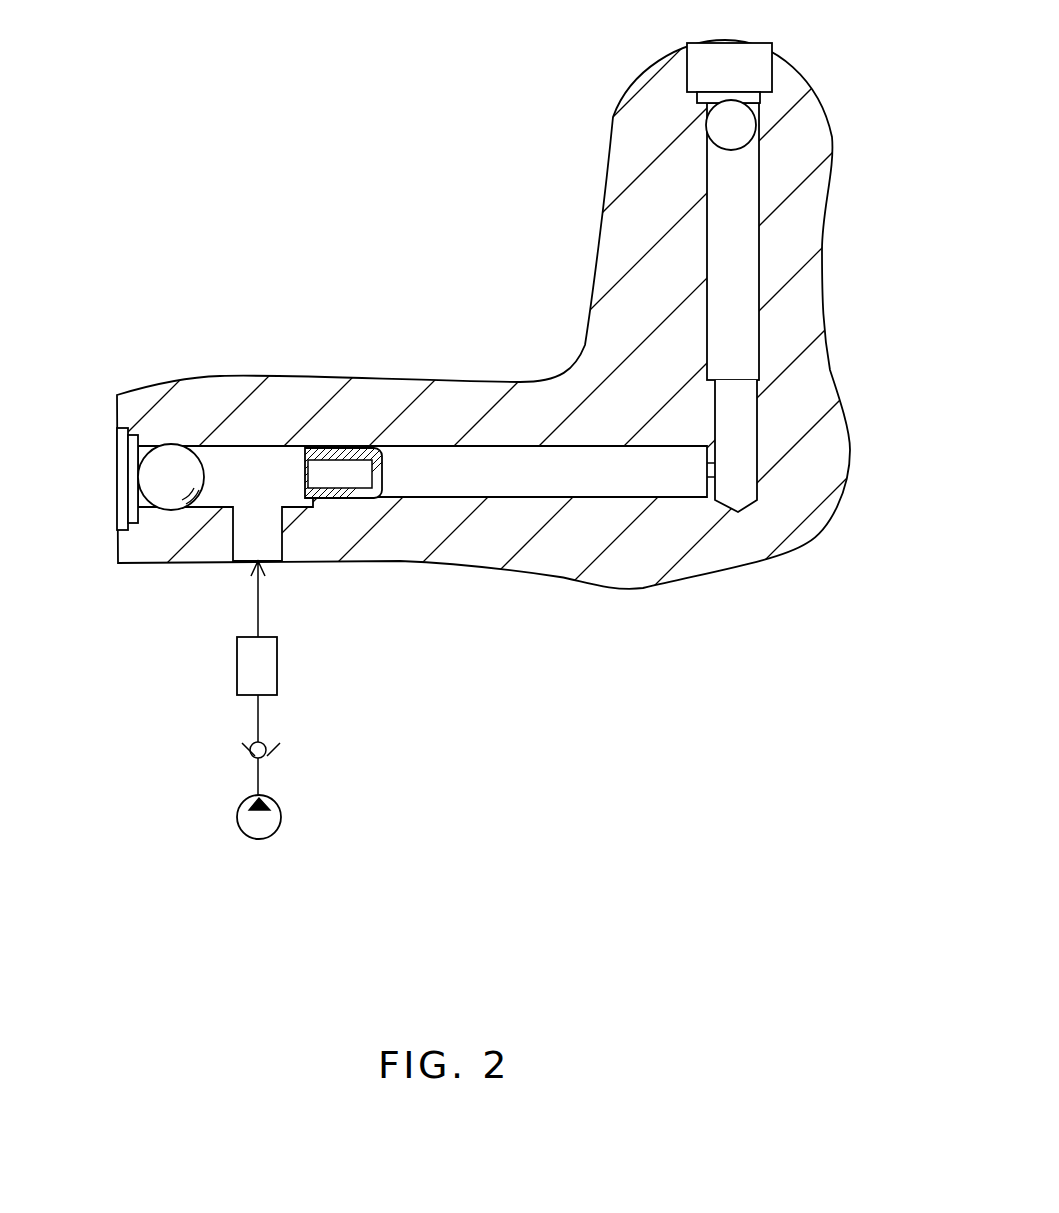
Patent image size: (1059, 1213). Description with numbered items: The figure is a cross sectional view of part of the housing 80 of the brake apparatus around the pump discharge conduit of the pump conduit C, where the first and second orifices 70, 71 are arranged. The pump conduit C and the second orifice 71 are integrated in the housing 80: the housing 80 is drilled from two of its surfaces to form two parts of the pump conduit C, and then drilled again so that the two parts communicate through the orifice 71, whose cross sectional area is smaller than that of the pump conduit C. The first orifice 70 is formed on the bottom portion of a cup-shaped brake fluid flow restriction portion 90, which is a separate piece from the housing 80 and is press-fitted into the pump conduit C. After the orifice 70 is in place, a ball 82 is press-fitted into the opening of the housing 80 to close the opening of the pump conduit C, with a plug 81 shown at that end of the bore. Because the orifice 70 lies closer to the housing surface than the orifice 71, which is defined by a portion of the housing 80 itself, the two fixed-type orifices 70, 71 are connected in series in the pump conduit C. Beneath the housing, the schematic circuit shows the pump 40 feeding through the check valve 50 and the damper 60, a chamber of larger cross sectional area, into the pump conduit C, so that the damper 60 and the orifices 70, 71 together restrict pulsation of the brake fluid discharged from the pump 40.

The pump 40 is at (282, 817).
The check valve 50 is at (273, 750).
The damper 60 is at (265, 668).
The first orifice 70 is at (383, 473).
The second orifice 71 is at (707, 467).
The housing 80 is at (220, 372).
The plug 81 is at (117, 412).
The ball 82 is at (153, 480).
The brake fluid flow restriction portion 90 is at (299, 468).
The pump conduit C is at (722, 247).